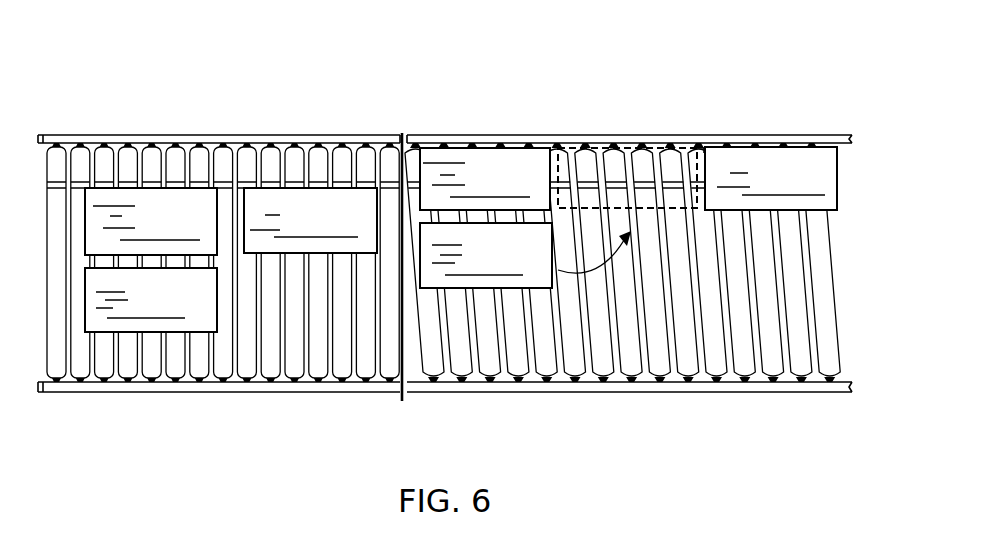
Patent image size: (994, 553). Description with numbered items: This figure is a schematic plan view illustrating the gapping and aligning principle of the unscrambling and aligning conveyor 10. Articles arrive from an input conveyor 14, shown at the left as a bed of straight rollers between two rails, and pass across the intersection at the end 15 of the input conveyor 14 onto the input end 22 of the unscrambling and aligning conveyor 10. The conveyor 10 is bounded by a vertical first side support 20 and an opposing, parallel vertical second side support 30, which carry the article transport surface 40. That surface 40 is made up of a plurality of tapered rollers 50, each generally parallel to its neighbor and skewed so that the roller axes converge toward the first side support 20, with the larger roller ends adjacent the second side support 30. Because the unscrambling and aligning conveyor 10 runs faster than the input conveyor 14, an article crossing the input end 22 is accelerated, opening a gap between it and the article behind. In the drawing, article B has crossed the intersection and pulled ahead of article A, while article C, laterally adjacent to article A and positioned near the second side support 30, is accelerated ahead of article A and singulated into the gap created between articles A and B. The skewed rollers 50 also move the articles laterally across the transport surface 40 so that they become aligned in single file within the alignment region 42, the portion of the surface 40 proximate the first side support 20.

The unscrambling and aligning conveyor 10 is at (208, 81).
The input conveyor 14 is at (152, 413).
The end of input conveyor 15 is at (401, 401).
The input end 22 is at (404, 152).
The second side support 30 is at (605, 388).
The first side support 20 is at (660, 146).
The alignment region 42 is at (703, 150).
The article transport surface 40 is at (718, 307).
The tapered roller 50 is at (690, 362).